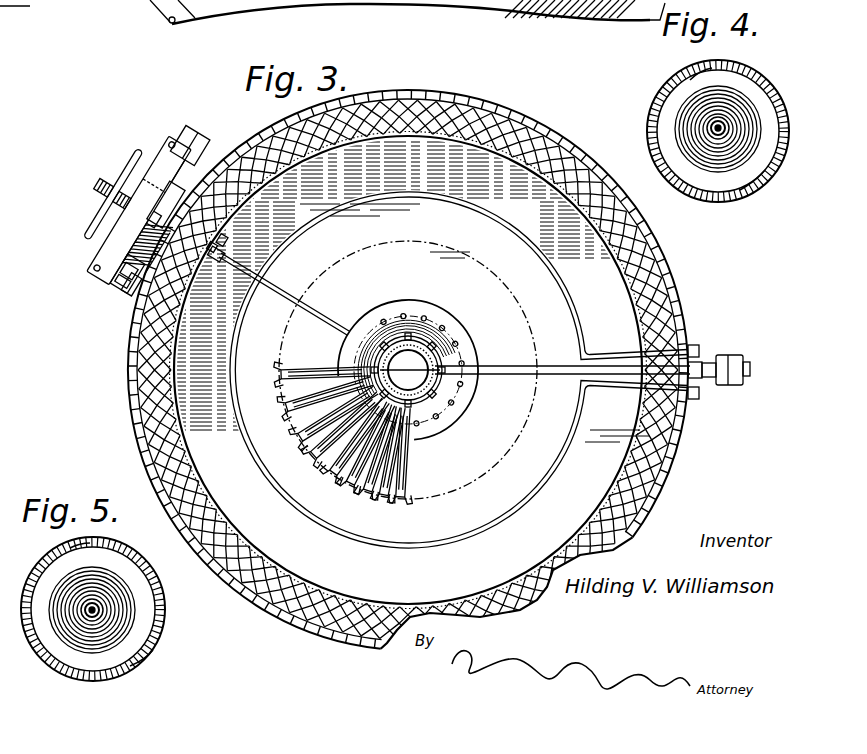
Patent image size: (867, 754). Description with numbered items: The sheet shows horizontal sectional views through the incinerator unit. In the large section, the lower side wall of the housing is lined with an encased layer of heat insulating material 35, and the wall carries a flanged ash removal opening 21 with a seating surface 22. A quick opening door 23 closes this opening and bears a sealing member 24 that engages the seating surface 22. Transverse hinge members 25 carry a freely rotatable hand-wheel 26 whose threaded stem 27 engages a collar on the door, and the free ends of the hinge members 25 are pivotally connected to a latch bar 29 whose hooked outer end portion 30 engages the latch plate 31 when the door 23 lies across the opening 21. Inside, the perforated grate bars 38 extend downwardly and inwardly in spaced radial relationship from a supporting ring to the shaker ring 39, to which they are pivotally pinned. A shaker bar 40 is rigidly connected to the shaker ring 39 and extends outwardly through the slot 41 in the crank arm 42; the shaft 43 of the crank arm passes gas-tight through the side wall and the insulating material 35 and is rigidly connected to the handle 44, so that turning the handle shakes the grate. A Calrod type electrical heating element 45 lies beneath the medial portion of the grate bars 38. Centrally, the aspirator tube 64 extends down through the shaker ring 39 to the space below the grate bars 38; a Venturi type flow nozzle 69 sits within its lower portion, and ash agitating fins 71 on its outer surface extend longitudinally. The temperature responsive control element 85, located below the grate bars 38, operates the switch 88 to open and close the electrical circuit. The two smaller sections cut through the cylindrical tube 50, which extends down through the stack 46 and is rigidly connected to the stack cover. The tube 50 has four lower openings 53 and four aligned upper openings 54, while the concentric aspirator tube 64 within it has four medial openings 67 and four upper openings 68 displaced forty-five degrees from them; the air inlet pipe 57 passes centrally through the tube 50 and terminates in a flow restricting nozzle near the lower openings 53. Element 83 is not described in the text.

In FIG. 3, the flanged ash removal opening 21 is at (228, 298).
In FIG. 3, the seating surface 22 is at (222, 185).
In FIG. 3, the quick opening door 23 is at (110, 280).
In FIG. 3, the sealing member 24 is at (192, 172).
In FIG. 3, the transverse hinge members 25 is at (160, 160).
In FIG. 3, the hand-wheel 26 is at (133, 160).
In FIG. 3, the threaded stem 27 is at (98, 186).
In FIG. 3, the latch bar 29 is at (128, 296).
In FIG. 3, the hooked outer end portion 30 is at (132, 304).
In FIG. 3, the latch plate 31 is at (118, 290).
In FIG. 3, the heat insulating material 35 is at (645, 472).
In FIG. 3, the perforated grate bars 38 is at (314, 370).
In FIG. 3, the shaker ring 39 is at (472, 344).
In FIG. 3, the shaker bar 40 is at (338, 327).
In FIG. 3, the slot 41 is at (226, 256).
In FIG. 3, the crank arm 42 is at (216, 250).
In FIG. 3, the shaft 43 is at (226, 240).
In FIG. 3, the handle 44 is at (138, 213).
In FIG. 3, the Calrod type electrical heating element 45 is at (583, 331).
In FIG. 3, the stack 46 is at (683, 444).
In FIG. 4, the cylindrical tube 50 is at (714, 200).
In FIG. 5, the cylindrical tube 50 is at (166, 612).
In FIG. 5, the openings 53 is at (60, 552).
In FIG. 4, the openings 54 is at (663, 92).
In FIG. 4, the air inlet pipe 57 is at (730, 126).
In FIG. 5, the air inlet pipe 57 is at (106, 612).
In FIG. 3, the aspirator tube 64 is at (448, 380).
In FIG. 4, the aspirator tube 64 is at (777, 126).
In FIG. 5, the aspirator tube 64 is at (152, 575).
In FIG. 5, the openings 67 is at (86, 548).
In FIG. 4, the openings 68 is at (670, 78).
In FIG. 3, the Venturi type flow nozzle 69 is at (452, 418).
In FIG. 3, the ash agitating fins 71 is at (433, 340).
In FIG. 3, the knob 83 is at (751, 367).
In FIG. 3, the temperature responsive control element 85 is at (500, 360).
In FIG. 3, the switch 88 is at (730, 356).